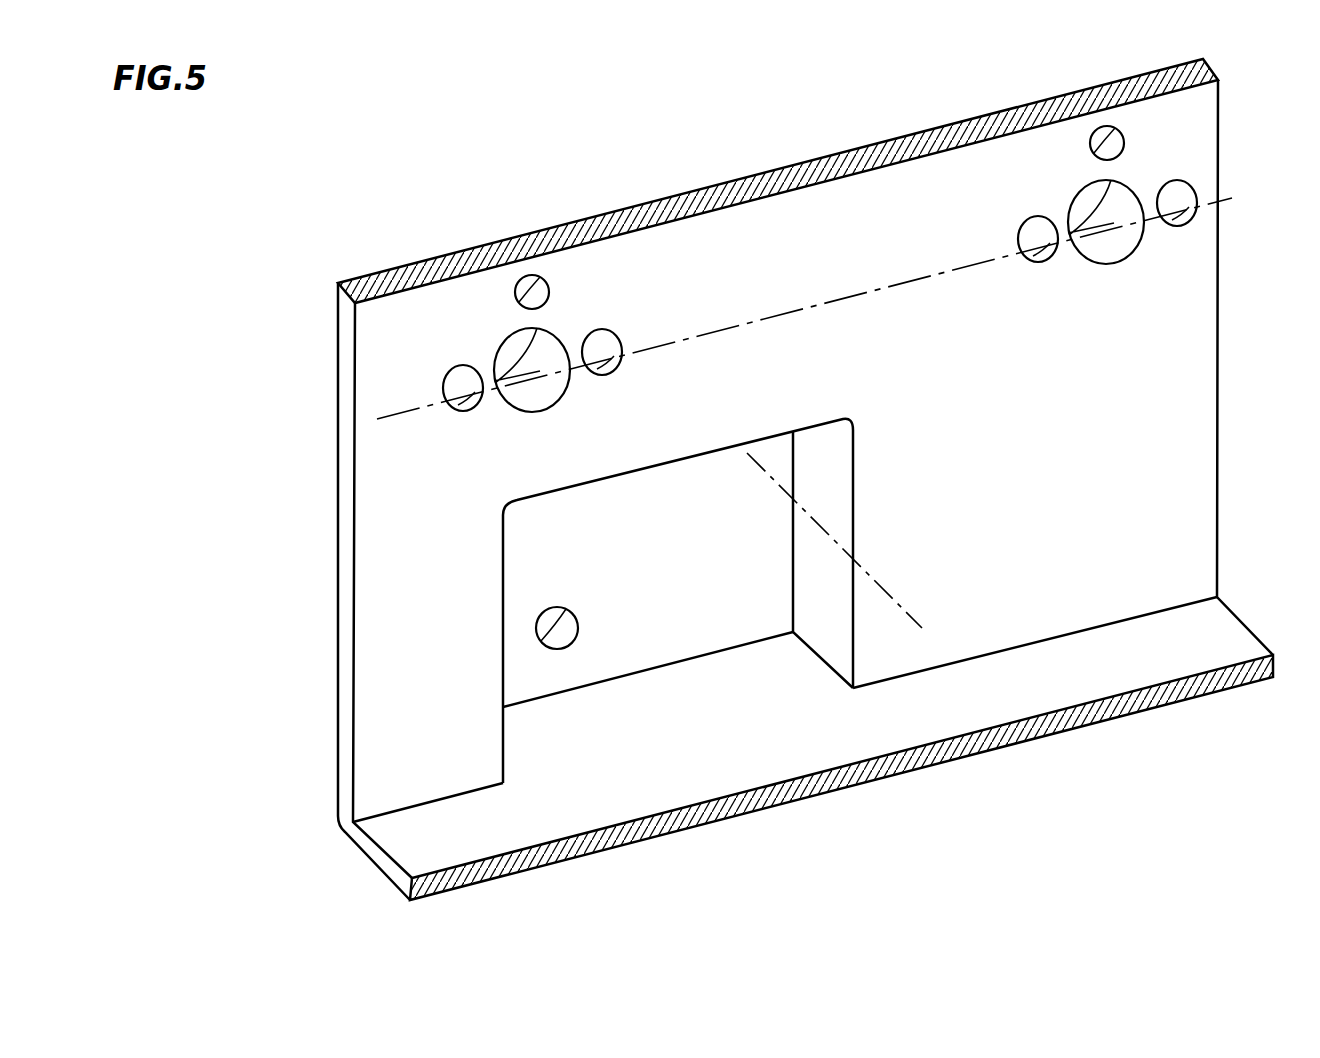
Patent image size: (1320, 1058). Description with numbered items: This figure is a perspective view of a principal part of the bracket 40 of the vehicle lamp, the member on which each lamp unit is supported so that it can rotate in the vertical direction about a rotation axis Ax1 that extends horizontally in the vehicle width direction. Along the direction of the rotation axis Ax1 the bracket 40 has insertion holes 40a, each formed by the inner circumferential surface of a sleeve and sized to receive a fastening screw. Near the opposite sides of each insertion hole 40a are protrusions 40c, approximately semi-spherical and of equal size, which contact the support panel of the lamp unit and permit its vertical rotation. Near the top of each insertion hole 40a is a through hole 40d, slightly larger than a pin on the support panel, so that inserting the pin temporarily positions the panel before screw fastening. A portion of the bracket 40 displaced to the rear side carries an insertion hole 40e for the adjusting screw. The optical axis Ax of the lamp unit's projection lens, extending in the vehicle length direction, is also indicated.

The bracket 40 is at (320, 627).
The insertion hole 40a is at (517, 390).
The protrusion 40c is at (482, 403).
The through hole 40d is at (548, 285).
The insertion hole 40e is at (578, 623).
The optical axis Ax is at (877, 575).
The rotation axis Ax1 is at (877, 288).